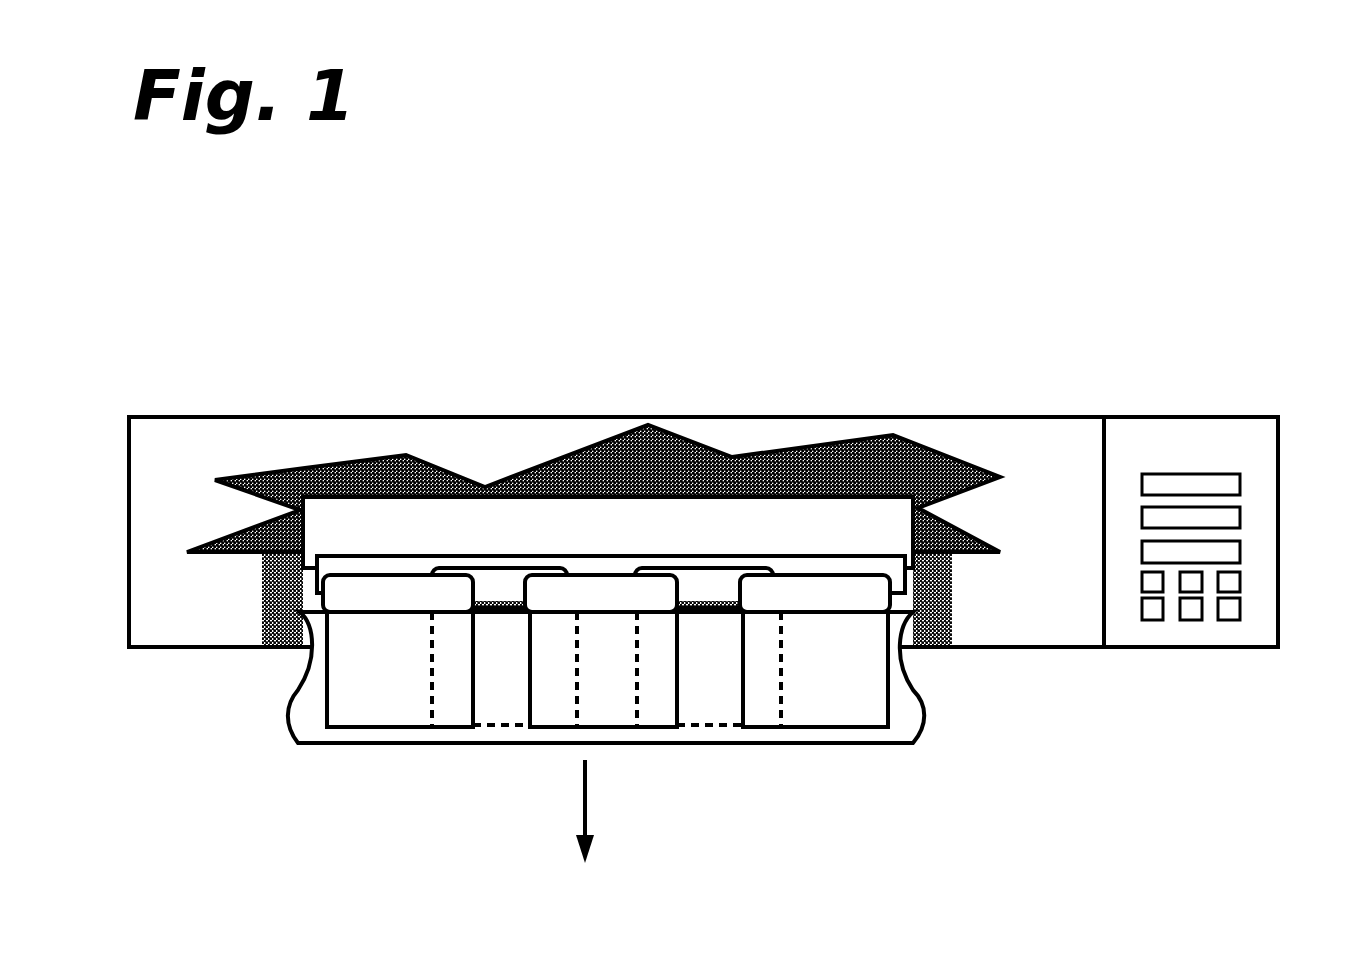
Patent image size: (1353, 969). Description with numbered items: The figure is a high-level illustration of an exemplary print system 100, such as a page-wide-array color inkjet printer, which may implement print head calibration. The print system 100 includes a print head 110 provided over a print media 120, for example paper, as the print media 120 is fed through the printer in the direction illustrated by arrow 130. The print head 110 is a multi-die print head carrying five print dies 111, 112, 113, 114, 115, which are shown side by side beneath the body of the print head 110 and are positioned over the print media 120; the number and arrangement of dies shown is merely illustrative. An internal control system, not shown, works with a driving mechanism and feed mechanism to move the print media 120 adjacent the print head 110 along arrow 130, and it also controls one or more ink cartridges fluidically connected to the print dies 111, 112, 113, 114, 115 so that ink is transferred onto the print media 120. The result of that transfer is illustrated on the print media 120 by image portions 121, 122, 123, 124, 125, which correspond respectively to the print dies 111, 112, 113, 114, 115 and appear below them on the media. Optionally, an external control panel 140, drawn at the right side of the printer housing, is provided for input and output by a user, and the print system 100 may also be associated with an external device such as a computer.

The print system 100 is at (1080, 267).
The print head 110 is at (611, 538).
The print die 111 is at (416, 603).
The print die 112 is at (518, 597).
The print die 113 is at (616, 603).
The print die 114 is at (727, 596).
The print die 115 is at (831, 604).
The print media 120 is at (293, 722).
The image portion 121 is at (393, 727).
The image portion 122 is at (497, 727).
The image portion 123 is at (612, 728).
The image portion 124 is at (708, 728).
The image portion 125 is at (833, 728).
The arrow 130 is at (585, 807).
The external control panel 140 is at (1167, 460).